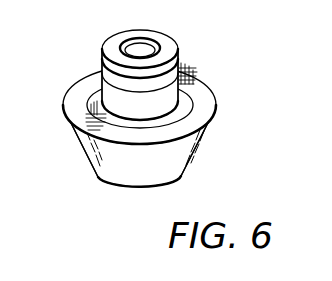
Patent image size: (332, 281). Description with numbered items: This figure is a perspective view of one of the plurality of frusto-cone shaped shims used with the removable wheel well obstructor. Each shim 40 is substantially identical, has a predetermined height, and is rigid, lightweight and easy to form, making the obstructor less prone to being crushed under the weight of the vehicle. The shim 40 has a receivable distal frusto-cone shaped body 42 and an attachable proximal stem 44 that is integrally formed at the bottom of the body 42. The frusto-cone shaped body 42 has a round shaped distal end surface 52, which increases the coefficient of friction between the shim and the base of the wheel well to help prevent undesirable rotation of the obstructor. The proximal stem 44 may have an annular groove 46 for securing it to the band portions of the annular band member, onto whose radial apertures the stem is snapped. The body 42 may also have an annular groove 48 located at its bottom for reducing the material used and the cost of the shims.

The shim 40 is at (207, 59).
The frusto-cone shaped body 42 is at (199, 140).
The proximal stem 44 is at (102, 56).
The annular groove 46 is at (162, 106).
The annular groove 48 is at (100, 103).
The round shaped distal end surface 52 is at (124, 186).